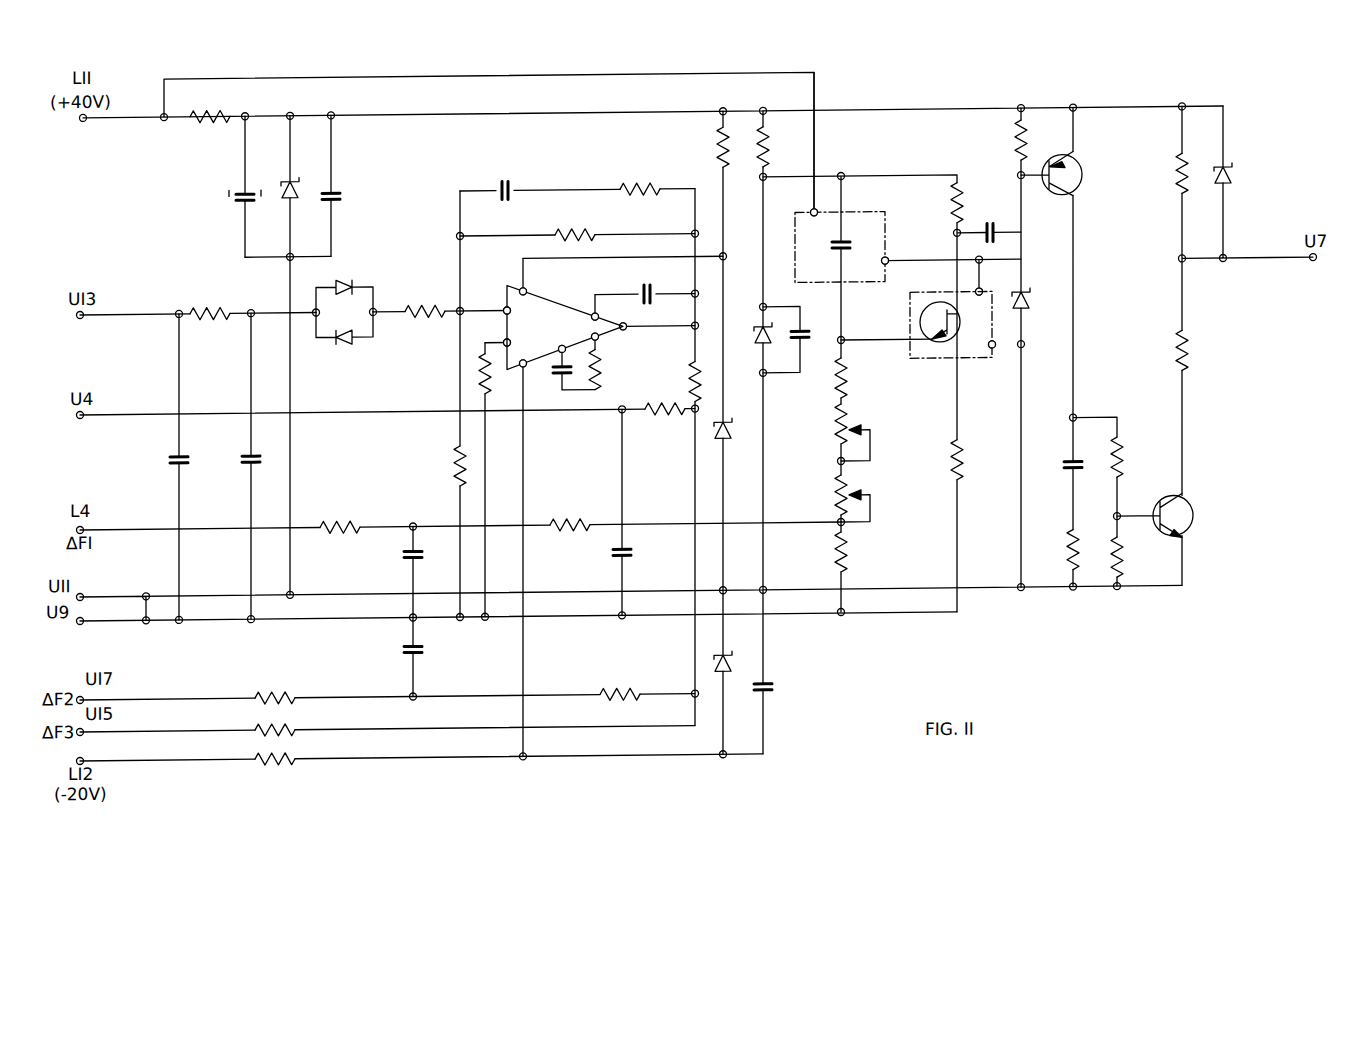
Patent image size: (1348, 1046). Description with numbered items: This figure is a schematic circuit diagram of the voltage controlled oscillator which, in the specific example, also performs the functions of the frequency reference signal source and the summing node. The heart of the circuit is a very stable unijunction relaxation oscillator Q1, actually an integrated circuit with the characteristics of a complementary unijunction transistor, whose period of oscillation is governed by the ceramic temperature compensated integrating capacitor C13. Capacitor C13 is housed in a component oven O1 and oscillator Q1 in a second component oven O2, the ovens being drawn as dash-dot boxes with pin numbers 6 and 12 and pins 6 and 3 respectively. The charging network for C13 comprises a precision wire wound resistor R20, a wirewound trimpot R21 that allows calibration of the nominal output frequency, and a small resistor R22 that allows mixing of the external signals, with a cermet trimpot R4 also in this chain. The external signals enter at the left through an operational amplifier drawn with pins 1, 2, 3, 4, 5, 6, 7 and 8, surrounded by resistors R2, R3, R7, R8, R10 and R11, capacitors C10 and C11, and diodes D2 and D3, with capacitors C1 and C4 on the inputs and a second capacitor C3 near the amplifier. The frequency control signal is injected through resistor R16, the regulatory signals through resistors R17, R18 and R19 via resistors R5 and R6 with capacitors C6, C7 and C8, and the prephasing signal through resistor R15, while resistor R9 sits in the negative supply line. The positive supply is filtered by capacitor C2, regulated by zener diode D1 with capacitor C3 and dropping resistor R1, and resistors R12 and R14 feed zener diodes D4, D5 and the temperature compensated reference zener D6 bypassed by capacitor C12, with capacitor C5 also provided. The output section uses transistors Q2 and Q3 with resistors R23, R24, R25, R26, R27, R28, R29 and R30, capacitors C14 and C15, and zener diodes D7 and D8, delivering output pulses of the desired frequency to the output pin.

The resistor R1 is at (206, 128).
The resistor R2 is at (224, 302).
The resistor R3 is at (426, 306).
The trimpot R4 is at (836, 502).
The resistor R5 is at (340, 522).
The resistor R6 is at (278, 692).
The resistor R7 is at (448, 462).
The resistor R8 is at (476, 370).
The resistor R9 is at (298, 754).
The resistor R10 is at (600, 374).
The resistor R11 is at (636, 186).
The resistor R12 is at (720, 152).
The resistor R14 is at (768, 154).
The resistor R15 is at (680, 374).
The resistor R16 is at (672, 426).
The resistor R17 is at (578, 520).
The resistor R18 is at (624, 690).
The resistor R19 is at (298, 722).
The resistor R20 is at (848, 392).
The trimpot R21 is at (848, 426).
The small resistor R22 is at (848, 568).
The resistor R23 is at (962, 470).
The resistor R24 is at (962, 206).
The resistor R25 is at (1014, 144).
The resistor R26 is at (1066, 544).
The resistor R27 is at (1124, 468).
The resistor R28 is at (1124, 558).
The resistor R29 is at (1188, 366).
The resistor R30 is at (1176, 188).
The capacitor C1 is at (168, 460).
The capacitor C2 is at (224, 204).
The capacitor C3 is at (342, 199).
The capacitor C4 is at (242, 460).
The capacitor C5 is at (774, 694).
The capacitor C6 is at (400, 651).
The capacitor C7 is at (402, 560).
The capacitor C8 is at (634, 562).
The capacitor C10 is at (638, 296).
The capacitor C11 is at (505, 182).
The capacitor C12 is at (808, 334).
The integrating capacitor C13 is at (828, 258).
The capacitor C14 is at (990, 232).
The capacitor C15 is at (1060, 472).
The zener diode D1 is at (284, 208).
The diode D2 is at (344, 282).
The diode D3 is at (352, 348).
The zener diode D4 is at (734, 666).
The zener diode D5 is at (728, 426).
The reference zener diode D6 is at (750, 340).
The zener diode D7 is at (1024, 318).
The zener diode D8 is at (1232, 190).
The unijunction relaxation oscillator Q1 is at (924, 320).
The transistor Q2 is at (1078, 176).
The transistor Q3 is at (1194, 536).
The component oven O1 is at (840, 247).
The component oven O2 is at (951, 324).
The op-amp pin 1 is at (560, 351).
The op-amp inverting input pin 2 is at (504, 312).
The pin 3 is at (994, 356).
The op-amp negative supply pin 4 is at (520, 374).
The op-amp pin 5 is at (592, 318).
The pin 6 is at (812, 218).
The op-amp positive supply pin 7 is at (521, 292).
The op-amp pin 8 is at (597, 344).
The pin 12 is at (887, 268).